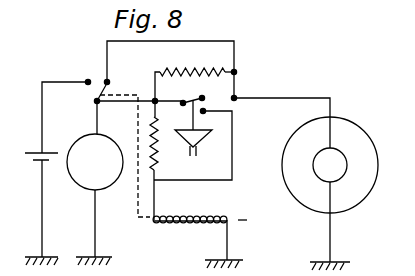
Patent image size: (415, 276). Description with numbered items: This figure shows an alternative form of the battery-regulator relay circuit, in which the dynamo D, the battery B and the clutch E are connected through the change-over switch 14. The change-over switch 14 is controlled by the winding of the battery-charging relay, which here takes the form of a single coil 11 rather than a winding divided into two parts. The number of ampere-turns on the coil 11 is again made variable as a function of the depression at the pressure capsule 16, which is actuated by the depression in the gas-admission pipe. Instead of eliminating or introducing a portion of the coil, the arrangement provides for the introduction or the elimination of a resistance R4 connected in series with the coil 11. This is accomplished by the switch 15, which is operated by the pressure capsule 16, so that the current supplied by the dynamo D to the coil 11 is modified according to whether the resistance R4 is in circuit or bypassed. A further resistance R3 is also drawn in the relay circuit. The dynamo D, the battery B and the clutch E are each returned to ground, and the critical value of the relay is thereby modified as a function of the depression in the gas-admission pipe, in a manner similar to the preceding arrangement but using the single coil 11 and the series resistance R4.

The change-over switch 14 is at (95, 94).
The switch 15 is at (187, 98).
The pressure capsule 16 is at (200, 139).
The coil 11 is at (196, 215).
The battery B is at (37, 164).
The dynamo D is at (80, 182).
The clutch E is at (372, 171).
The resistance R3 is at (194, 79).
The resistance R4 is at (160, 158).